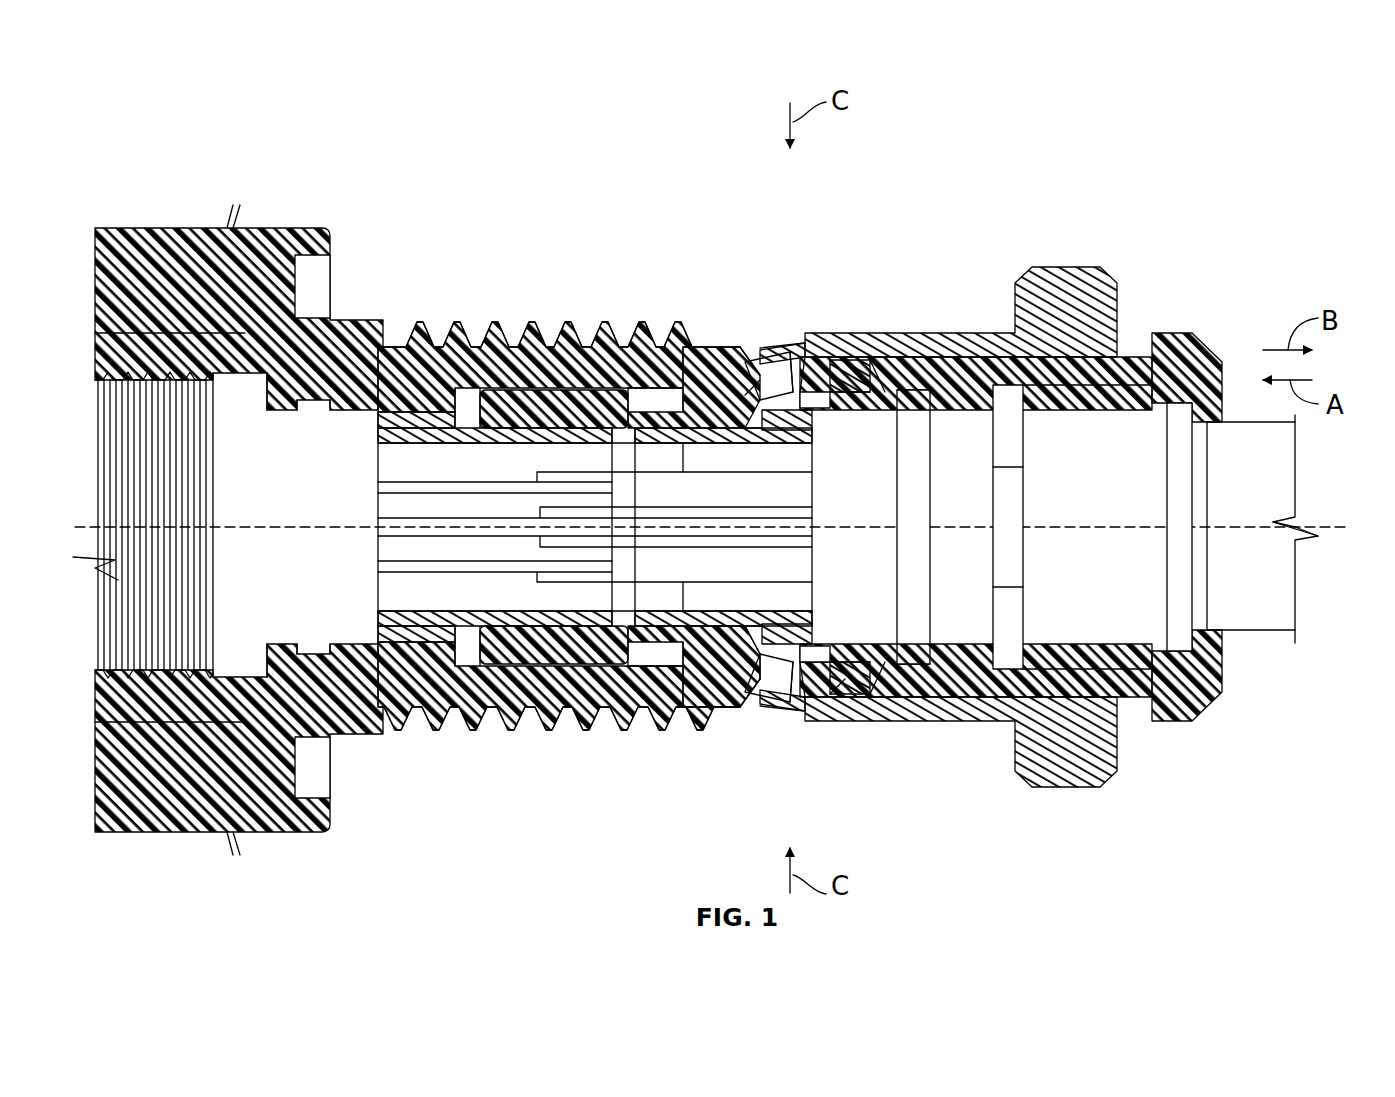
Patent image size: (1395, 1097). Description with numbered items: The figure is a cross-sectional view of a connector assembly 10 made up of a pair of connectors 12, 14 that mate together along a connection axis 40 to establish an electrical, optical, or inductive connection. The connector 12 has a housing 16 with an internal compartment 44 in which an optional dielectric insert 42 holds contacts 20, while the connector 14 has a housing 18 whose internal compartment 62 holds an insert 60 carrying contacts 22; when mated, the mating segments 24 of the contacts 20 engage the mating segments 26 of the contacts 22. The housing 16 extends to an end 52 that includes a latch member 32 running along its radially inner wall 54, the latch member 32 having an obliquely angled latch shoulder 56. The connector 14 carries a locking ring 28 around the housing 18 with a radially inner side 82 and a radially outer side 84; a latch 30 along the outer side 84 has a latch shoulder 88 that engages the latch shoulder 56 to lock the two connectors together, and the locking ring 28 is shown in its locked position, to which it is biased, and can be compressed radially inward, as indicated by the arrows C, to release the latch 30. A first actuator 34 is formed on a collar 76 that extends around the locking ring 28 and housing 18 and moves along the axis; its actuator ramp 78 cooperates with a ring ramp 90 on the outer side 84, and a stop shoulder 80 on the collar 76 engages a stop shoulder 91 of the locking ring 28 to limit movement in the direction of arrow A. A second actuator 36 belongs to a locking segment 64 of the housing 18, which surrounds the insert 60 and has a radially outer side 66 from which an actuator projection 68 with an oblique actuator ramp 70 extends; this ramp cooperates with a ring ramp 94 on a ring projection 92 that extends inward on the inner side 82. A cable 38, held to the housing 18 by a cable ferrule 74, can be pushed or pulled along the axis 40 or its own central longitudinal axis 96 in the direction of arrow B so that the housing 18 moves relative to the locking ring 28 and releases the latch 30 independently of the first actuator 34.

The connector assembly 10 is at (1073, 160).
The connector 12 is at (372, 266).
The connector 14 is at (1150, 302).
The housing 16 is at (450, 333).
The housing 18 is at (1126, 358).
The contacts 20 is at (502, 562).
The contacts 22 is at (687, 552).
The mating segments 24 is at (468, 562).
The mating segments 26 is at (595, 628).
The locking ring 28 is at (882, 402).
The latch 30 is at (748, 702).
The latch member 32 is at (765, 702).
The actuator 34 is at (838, 355).
The actuator 36 is at (740, 372).
The cable 38 is at (1258, 636).
The connection axis 40 is at (78, 527).
The insert 42 is at (494, 412).
The internal compartment 44 is at (405, 327).
The end 52 is at (765, 340).
The inner wall 54 is at (548, 392).
The latch shoulder 56 is at (748, 370).
The insert 60 is at (624, 560).
The internal compartment 62 is at (920, 400).
The locking segment 64 is at (722, 628).
The outer side 66 is at (655, 415).
The actuator projection 68 is at (705, 392).
The actuator ramp 70 is at (760, 418).
The cable ferrule 74 is at (1198, 690).
The collar 76 is at (978, 348).
The actuator ramp 78 is at (845, 368).
The stop shoulder 80 is at (775, 352).
The inner side 82 is at (840, 412).
The outer side 84 is at (878, 380).
The latch shoulder 88 is at (770, 412).
The ring ramp 90 is at (812, 360).
The stop shoulder 91 is at (790, 355).
The ring projection 92 is at (772, 658).
The ring ramp 94 is at (752, 383).
The central longitudinal axis 96 is at (1318, 535).